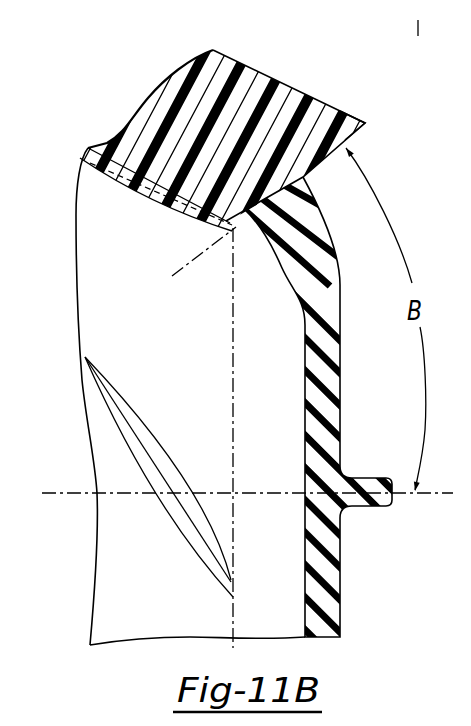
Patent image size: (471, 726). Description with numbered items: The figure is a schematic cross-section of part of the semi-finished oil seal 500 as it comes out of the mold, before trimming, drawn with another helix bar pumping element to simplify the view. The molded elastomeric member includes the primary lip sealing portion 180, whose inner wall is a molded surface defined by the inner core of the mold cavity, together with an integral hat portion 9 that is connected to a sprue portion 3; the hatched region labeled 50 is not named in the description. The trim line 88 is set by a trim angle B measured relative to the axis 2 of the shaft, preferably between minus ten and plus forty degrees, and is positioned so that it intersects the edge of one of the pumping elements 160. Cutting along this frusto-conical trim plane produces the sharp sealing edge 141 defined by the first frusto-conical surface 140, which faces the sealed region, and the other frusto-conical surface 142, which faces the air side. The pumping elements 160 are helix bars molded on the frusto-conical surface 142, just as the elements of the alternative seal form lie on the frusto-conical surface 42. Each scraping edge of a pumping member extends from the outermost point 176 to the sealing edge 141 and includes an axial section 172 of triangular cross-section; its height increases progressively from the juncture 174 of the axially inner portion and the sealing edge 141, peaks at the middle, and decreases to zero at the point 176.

The head insert 50 is at (293, 88).
The trim line 88 is at (368, 124).
The frusto-conical surface 42 is at (470, 167).
The frusto-conical surface 142 is at (103, 172).
The primary lip sealing portion 180 is at (183, 216).
The first frusto-conical surface 140 is at (240, 214).
The sealing edge 141 is at (236, 351).
The axis 2 is at (254, 494).
The hat portion 9 is at (341, 318).
The sprue portion 3 is at (363, 478).
The pumping elements 160 is at (86, 357).
The outermost point 176 is at (86, 356).
The axial section 172 is at (158, 440).
The juncture 174 is at (265, 521).
The semi-finished oil seal 500 is at (376, 548).